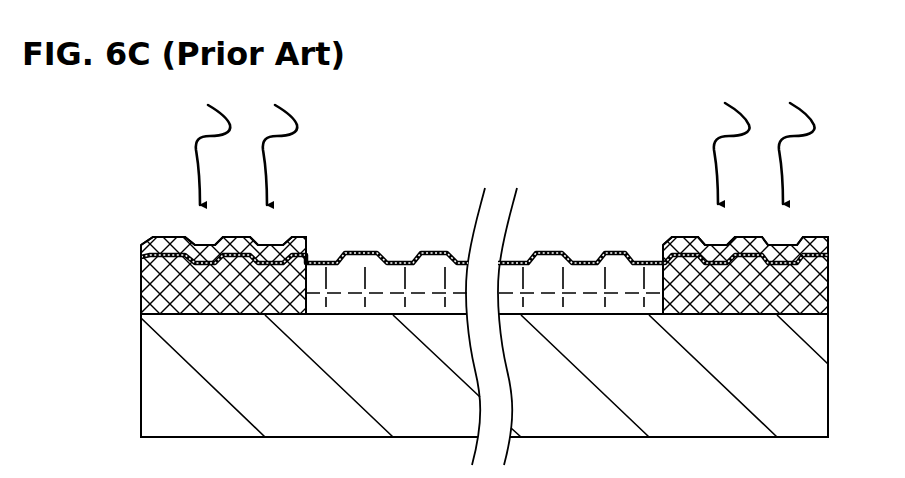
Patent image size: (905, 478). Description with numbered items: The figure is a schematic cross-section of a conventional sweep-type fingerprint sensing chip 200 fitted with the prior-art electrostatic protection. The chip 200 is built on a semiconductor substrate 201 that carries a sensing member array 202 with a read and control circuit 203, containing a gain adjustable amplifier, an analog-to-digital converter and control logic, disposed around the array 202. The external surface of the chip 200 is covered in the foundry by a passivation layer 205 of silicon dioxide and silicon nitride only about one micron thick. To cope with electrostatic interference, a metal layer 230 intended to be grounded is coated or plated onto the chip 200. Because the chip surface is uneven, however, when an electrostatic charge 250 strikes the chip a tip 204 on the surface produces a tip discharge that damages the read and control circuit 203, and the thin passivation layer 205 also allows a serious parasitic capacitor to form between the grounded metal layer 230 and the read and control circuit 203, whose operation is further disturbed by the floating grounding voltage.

The sweep-type fingerprint sensing chip 200 is at (601, 122).
The semiconductor substrate 201 is at (157, 397).
The sensing member array 202 is at (427, 278).
The read and control circuit 203 is at (152, 290).
The tip 204 is at (305, 237).
The passivation layer 205 is at (148, 237).
The metal layer 230 is at (152, 257).
The electrostatic charge 250 is at (263, 168).